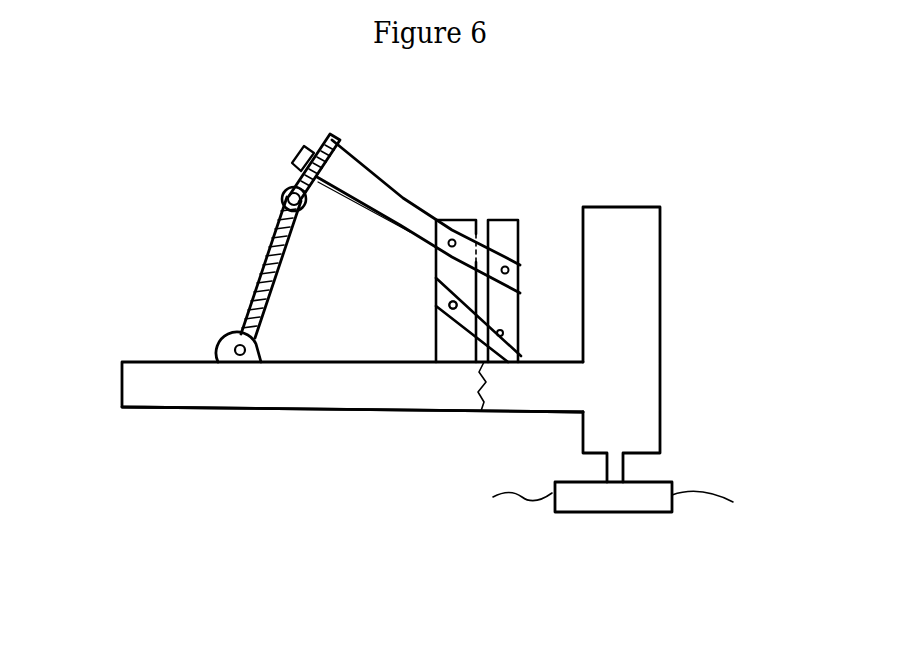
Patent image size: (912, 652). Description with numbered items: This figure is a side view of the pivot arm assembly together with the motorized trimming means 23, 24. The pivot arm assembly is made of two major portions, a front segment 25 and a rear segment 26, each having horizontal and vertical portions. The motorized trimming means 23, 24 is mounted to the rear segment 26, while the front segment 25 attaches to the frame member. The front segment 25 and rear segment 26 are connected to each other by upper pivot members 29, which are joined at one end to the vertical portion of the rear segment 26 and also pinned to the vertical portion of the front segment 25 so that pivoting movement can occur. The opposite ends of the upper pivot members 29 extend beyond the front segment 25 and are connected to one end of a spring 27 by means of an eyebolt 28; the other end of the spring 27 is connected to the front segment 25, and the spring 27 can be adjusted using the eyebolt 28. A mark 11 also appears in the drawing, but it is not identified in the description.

The aperture 11 is at (440, 323).
The motorized trimming means 23 is at (678, 344).
The motorized trimming means 24 is at (658, 459).
The front segment 25 is at (352, 487).
The rear segment 26 is at (352, 522).
The spring 27 is at (185, 248).
The eyebolt 28 is at (177, 158).
The upper pivot members 29 is at (419, 242).